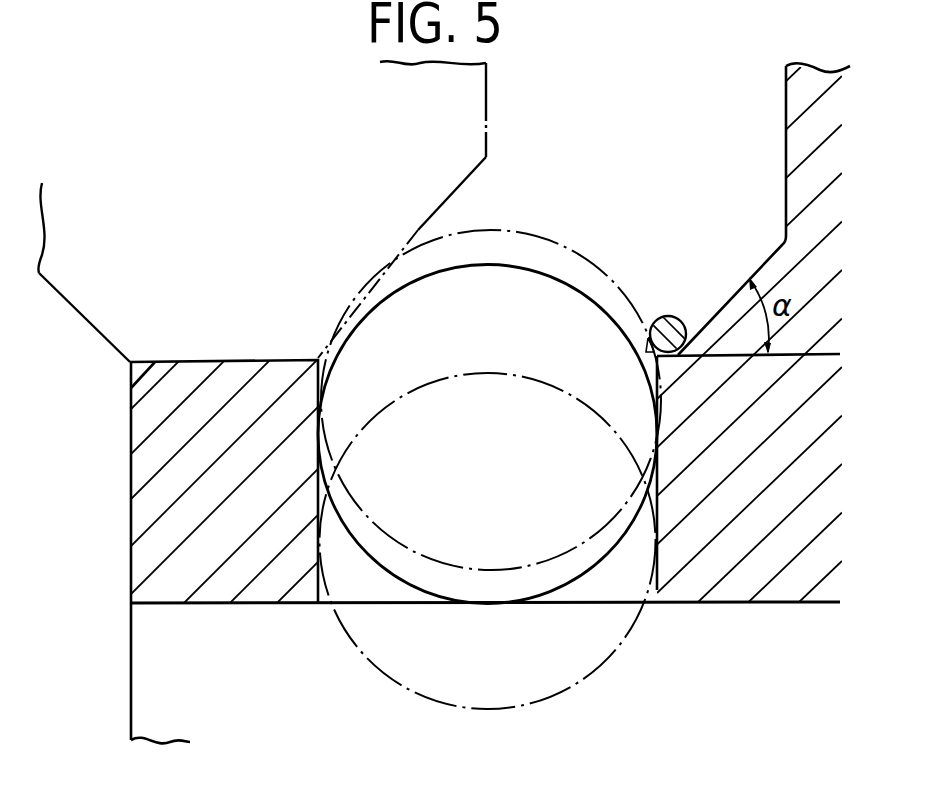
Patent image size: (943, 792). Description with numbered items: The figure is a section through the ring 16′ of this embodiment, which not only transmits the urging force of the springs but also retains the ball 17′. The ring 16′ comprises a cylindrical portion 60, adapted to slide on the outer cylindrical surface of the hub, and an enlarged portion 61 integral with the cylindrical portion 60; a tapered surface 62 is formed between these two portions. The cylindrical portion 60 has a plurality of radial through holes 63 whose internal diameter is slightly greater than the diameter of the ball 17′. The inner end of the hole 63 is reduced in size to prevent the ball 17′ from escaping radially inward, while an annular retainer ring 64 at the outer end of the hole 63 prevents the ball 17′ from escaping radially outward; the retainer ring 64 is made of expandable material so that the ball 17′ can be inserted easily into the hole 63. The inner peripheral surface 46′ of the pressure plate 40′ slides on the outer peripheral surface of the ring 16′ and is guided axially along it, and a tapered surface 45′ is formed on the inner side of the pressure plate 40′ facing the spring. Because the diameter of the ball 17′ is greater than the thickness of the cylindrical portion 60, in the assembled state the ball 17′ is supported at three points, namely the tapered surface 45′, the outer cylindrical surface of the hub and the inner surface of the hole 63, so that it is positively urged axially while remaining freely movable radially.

The ring 16′ is at (694, 615).
The ball 17′ is at (547, 298).
The pressure plate 40′ is at (466, 154).
The tapered surface 45′ is at (440, 265).
The inner peripheral surface 46′ is at (82, 300).
The cylindrical portion 60 is at (204, 592).
The enlarged portion 61 is at (786, 149).
The tapered surface 62 is at (735, 292).
The radial through hole 63 is at (649, 336).
The annular retainer ring 64 is at (675, 328).